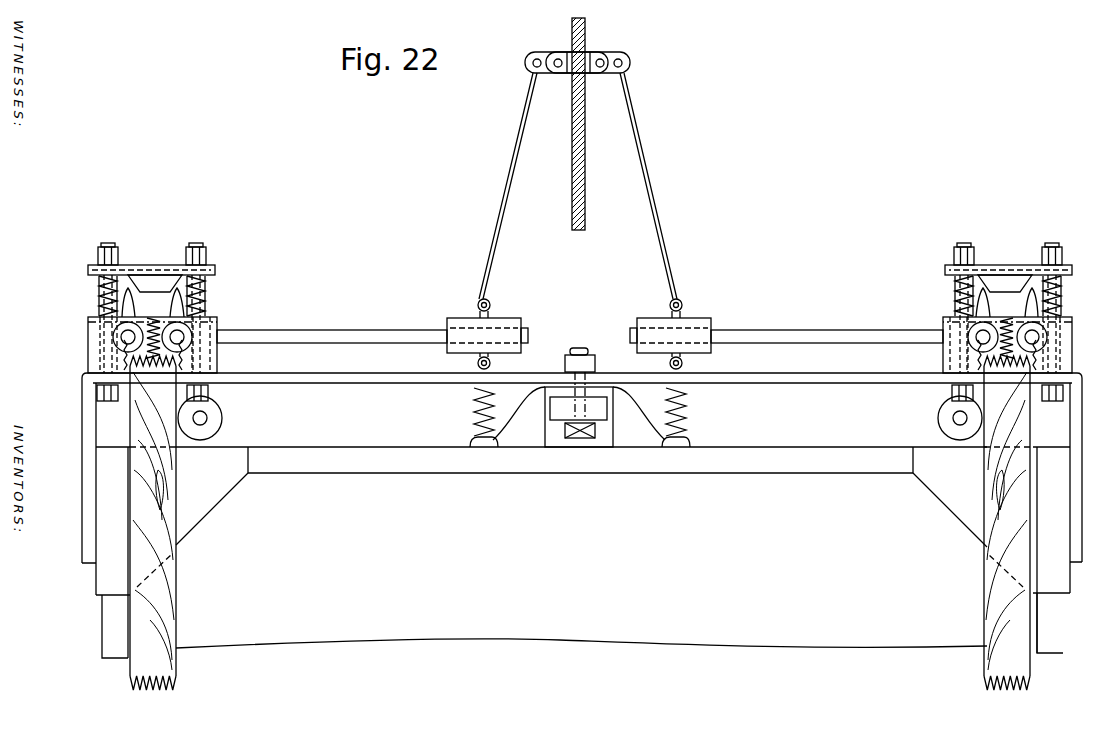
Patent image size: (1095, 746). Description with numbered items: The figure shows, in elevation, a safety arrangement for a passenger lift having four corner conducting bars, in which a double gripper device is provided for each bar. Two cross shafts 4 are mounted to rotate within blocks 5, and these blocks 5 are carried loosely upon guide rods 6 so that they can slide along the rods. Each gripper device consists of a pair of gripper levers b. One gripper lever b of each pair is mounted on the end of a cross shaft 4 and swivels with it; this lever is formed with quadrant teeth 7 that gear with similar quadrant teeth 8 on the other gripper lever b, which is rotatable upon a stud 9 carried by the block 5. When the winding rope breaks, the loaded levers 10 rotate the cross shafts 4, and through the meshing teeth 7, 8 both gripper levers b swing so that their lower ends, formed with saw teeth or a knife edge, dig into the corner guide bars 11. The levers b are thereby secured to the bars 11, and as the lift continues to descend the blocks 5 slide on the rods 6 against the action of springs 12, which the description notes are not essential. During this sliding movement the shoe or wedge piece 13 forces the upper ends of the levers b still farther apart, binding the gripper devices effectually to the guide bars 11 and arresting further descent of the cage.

The cross shaft 4 is at (183, 335).
The block 5 is at (210, 356).
The guide rod 6 is at (99, 283).
The quadrant teeth 7 is at (157, 365).
The quadrant teeth 8 is at (148, 338).
The stud 9 is at (120, 336).
The loaded lever 10 is at (372, 332).
The corner guide bar 11 is at (170, 568).
The spring 12 is at (99, 300).
The shoe or wedge piece 13 is at (140, 282).
The gripper lever b is at (180, 312).